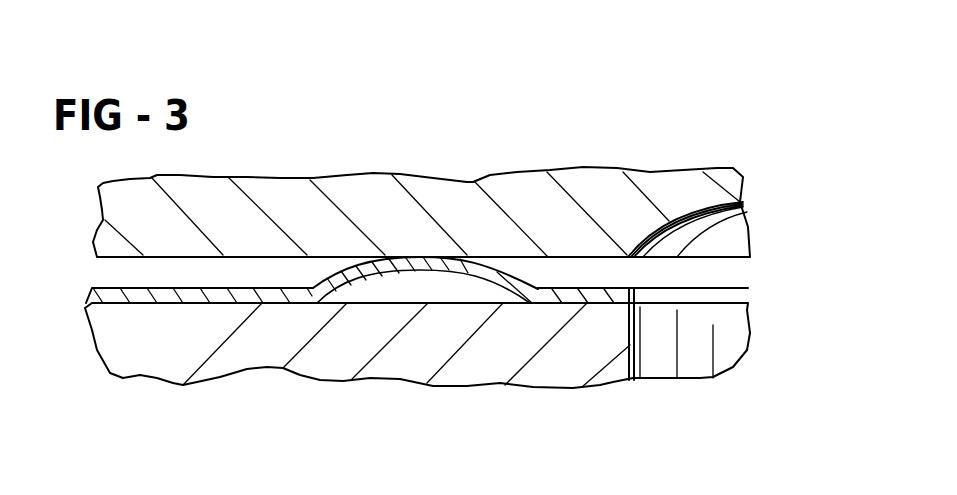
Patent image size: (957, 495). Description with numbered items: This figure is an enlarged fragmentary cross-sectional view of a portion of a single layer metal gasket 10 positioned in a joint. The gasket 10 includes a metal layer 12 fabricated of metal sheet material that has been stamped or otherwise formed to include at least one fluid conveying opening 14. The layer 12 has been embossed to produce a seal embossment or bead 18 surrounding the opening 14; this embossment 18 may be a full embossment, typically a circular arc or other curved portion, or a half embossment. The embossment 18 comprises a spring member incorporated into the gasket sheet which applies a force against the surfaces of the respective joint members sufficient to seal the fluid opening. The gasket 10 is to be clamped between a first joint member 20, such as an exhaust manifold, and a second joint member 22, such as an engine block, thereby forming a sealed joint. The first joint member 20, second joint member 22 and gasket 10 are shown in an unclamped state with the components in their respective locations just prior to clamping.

The metal gasket 10 is at (771, 254).
The metal layer 12 is at (187, 297).
The fluid conveying opening 14 is at (688, 297).
The seal embossment 18 is at (484, 268).
The first joint member 20 is at (570, 213).
The second joint member 22 is at (573, 360).